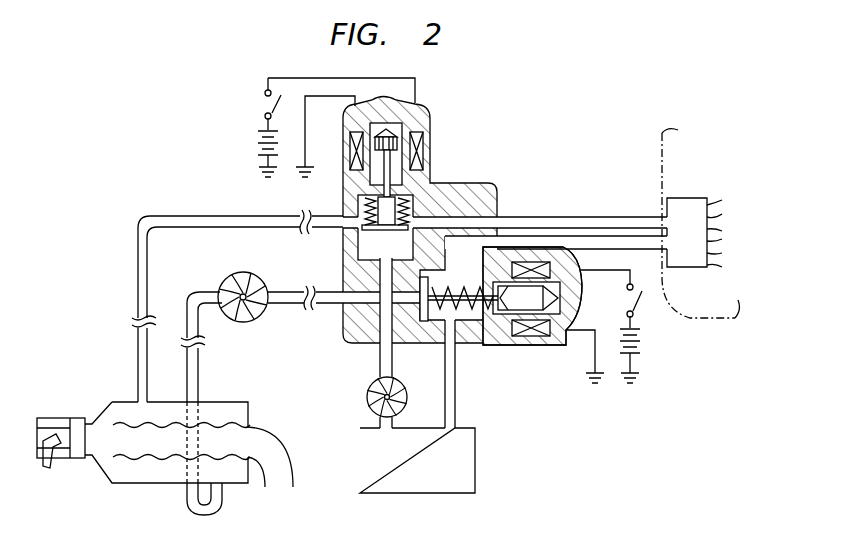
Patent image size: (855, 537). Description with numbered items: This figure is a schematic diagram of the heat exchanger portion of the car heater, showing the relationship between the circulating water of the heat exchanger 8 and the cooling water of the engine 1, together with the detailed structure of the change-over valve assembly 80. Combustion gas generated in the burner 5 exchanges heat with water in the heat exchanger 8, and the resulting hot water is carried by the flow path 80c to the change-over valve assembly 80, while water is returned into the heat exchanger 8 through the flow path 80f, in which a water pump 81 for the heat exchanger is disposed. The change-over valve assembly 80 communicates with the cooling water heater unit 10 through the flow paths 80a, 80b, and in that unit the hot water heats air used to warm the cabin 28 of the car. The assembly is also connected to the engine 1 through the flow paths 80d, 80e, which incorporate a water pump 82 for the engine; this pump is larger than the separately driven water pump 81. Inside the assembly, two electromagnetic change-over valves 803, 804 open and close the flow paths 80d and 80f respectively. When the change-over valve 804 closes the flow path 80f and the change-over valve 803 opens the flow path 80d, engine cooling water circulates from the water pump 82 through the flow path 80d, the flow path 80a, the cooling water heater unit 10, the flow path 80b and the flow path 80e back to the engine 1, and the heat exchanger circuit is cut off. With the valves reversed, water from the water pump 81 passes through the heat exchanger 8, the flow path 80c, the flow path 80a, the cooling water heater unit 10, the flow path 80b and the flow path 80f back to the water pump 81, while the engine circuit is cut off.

The engine 1 is at (470, 445).
The burner 5 is at (62, 418).
The heat exchanger 8 is at (119, 401).
The cooling water heater unit 10 is at (681, 205).
The cabin 28 is at (693, 305).
The change-over valve assembly 80 is at (485, 183).
The flow path 80a is at (531, 216).
The flow path 80b is at (583, 236).
The flow path 80c is at (318, 216).
The flow path 80d is at (380, 360).
The flow path 80e is at (458, 386).
The flow path 80f is at (337, 292).
The water pump 81 is at (236, 275).
The water pump 82 is at (369, 401).
The change-over valve 803 is at (431, 142).
The change-over valve 804 is at (533, 346).